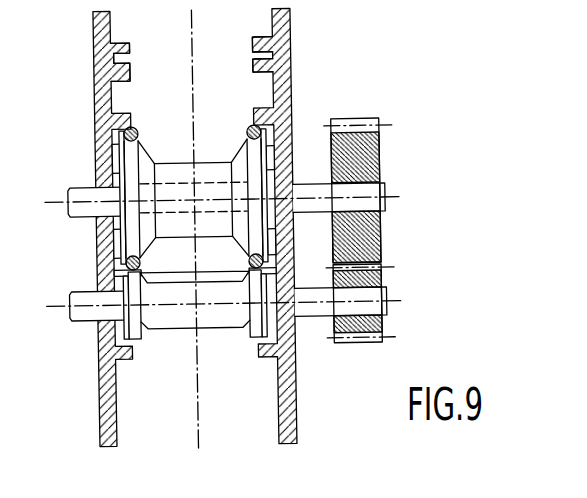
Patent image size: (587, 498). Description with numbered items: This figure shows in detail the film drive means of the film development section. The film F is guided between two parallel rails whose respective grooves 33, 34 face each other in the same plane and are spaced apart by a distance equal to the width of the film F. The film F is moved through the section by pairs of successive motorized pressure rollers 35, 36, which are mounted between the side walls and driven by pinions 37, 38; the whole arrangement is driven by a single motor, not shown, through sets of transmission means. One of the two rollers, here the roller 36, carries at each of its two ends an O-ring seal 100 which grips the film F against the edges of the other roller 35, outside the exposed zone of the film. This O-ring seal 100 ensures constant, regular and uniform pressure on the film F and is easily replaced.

The groove 33 is at (133, 58).
The groove 34 is at (276, 54).
The pressure roller 35 is at (176, 172).
The pressure roller 36 is at (174, 318).
The pinion 37 is at (381, 160).
The pinion 38 is at (381, 275).
The O-ring seal 100 is at (112, 266).
The film F is at (212, 267).